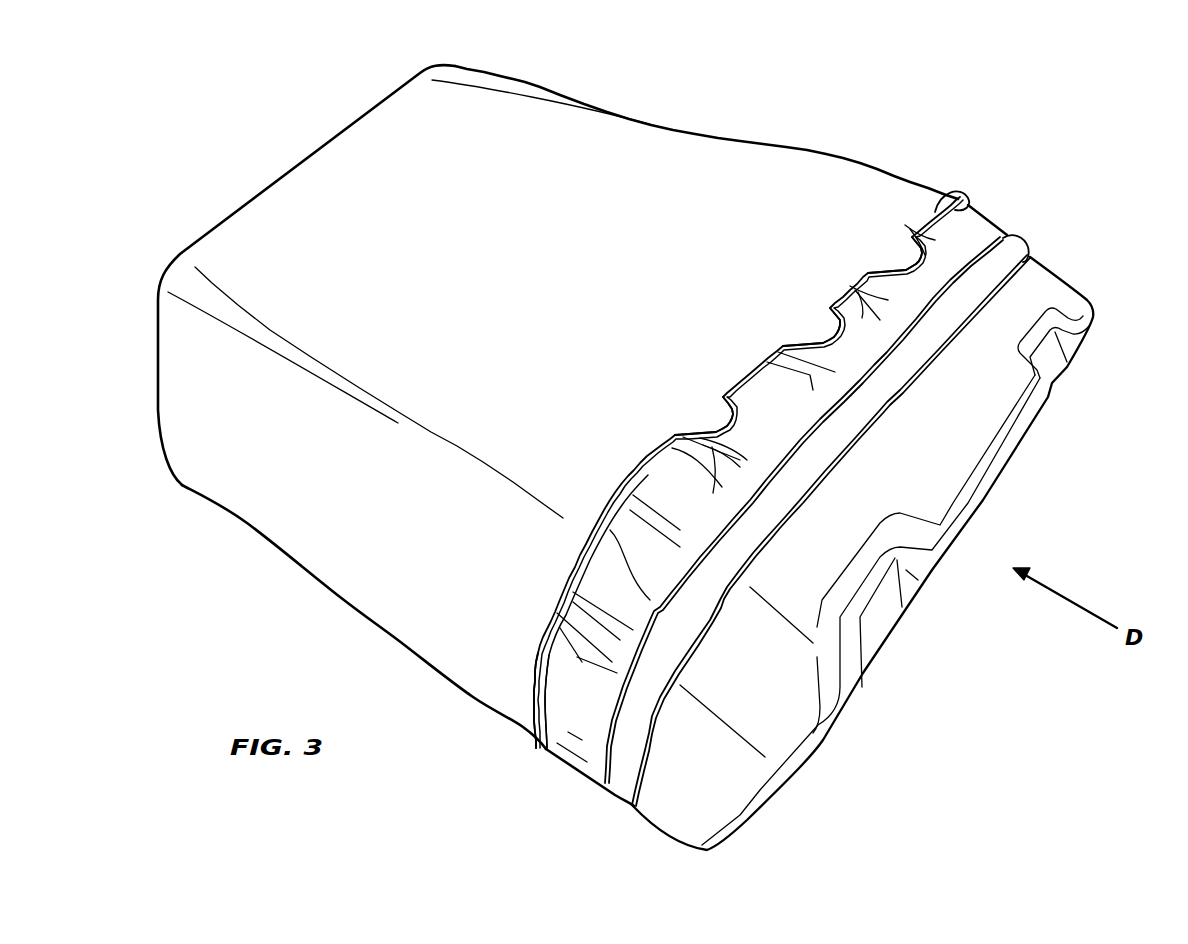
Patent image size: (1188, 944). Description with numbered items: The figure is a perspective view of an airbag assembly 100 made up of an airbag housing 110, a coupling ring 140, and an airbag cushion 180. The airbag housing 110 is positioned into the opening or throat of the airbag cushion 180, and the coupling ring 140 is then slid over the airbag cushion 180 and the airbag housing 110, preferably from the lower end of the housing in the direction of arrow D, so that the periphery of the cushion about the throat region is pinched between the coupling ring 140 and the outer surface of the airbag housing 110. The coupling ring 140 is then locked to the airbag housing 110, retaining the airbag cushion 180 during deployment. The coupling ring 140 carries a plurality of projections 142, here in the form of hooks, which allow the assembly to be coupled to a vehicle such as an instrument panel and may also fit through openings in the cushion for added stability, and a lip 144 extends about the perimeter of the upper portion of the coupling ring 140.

The airbag assembly 100 is at (895, 114).
The airbag housing 110 is at (777, 697).
The coupling ring 140 is at (574, 748).
The projections 142 is at (963, 192).
The lip 144 is at (535, 677).
The airbag cushion 180 is at (1017, 235).